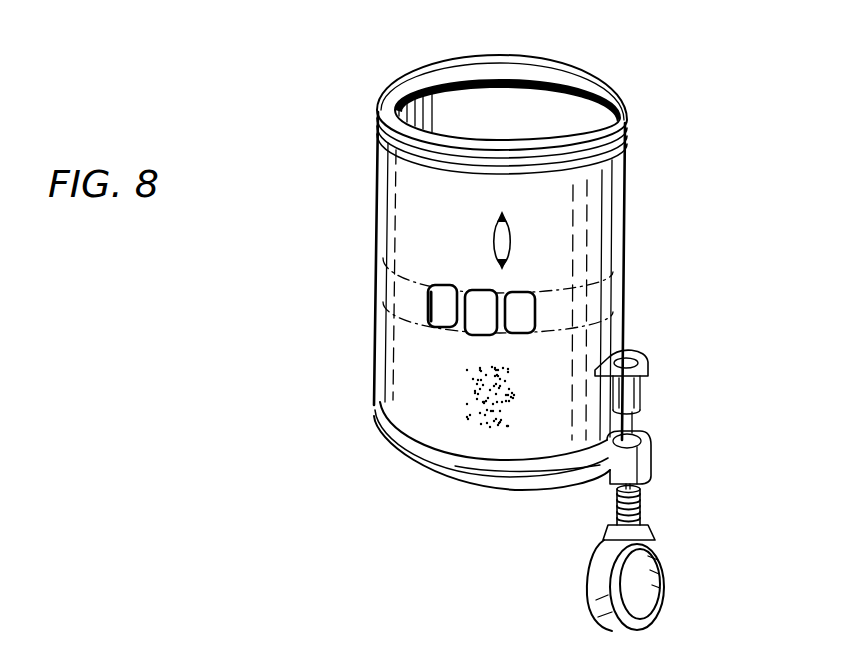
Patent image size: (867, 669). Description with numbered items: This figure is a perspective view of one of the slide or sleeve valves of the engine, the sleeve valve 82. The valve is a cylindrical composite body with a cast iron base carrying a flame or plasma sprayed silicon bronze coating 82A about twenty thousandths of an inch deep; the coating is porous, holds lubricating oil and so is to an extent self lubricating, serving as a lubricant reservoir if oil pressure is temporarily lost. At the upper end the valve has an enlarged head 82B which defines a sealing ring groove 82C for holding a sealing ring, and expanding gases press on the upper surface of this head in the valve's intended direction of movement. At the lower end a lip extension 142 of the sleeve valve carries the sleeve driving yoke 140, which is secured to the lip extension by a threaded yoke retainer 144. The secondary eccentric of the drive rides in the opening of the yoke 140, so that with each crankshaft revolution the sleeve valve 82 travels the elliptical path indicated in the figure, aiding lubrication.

The sleeve valve 82 is at (372, 184).
The silicon bronze coating 82A is at (488, 398).
The enlarged head 82B is at (440, 63).
The sealing ring groove 82C is at (627, 130).
The lip extension 142 is at (573, 468).
The threaded yoke retainer 144 is at (642, 390).
The sleeve driving yoke 140 is at (664, 558).